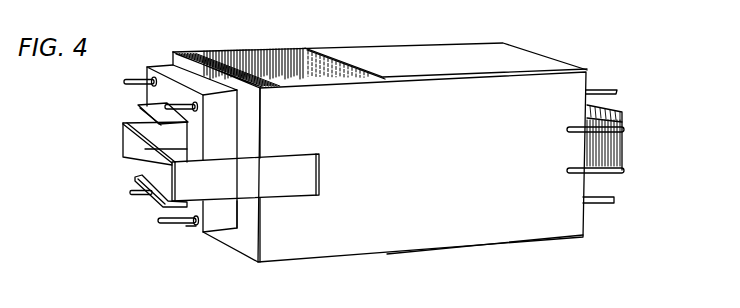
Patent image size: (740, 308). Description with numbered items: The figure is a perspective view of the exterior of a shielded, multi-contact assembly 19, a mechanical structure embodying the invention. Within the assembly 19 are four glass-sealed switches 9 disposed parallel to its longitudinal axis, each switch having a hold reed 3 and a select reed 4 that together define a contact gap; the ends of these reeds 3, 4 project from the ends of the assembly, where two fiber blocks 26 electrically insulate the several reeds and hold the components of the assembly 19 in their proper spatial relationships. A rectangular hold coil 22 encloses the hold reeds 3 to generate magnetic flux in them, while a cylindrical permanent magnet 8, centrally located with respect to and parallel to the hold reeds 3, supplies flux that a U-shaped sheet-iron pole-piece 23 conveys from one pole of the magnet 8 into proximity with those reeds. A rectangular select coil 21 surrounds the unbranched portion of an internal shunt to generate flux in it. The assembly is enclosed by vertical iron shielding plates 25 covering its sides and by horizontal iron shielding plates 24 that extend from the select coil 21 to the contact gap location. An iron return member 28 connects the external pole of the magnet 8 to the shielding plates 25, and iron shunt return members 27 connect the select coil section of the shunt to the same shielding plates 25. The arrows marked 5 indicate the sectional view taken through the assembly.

The hold reed 3 is at (130, 79).
The select reed 4 is at (612, 90).
The section line 5- 5 is at (692, 73).
The cylindrical permanent magnet 8 is at (160, 146).
The glass-sealed switch 9 is at (192, 226).
The shielded multi-contact assembly 19 is at (522, 62).
The select coil 21 is at (620, 146).
The hold coil 22 is at (223, 62).
The U-shaped sheet-iron pole-piece 23 is at (138, 107).
The horizontal iron shielding plate 24 is at (440, 53).
The vertical iron shielding plate 25 is at (279, 58).
The fiber block 26 is at (165, 70).
The iron shunt return member 27 is at (625, 128).
The iron return member 28 is at (245, 183).